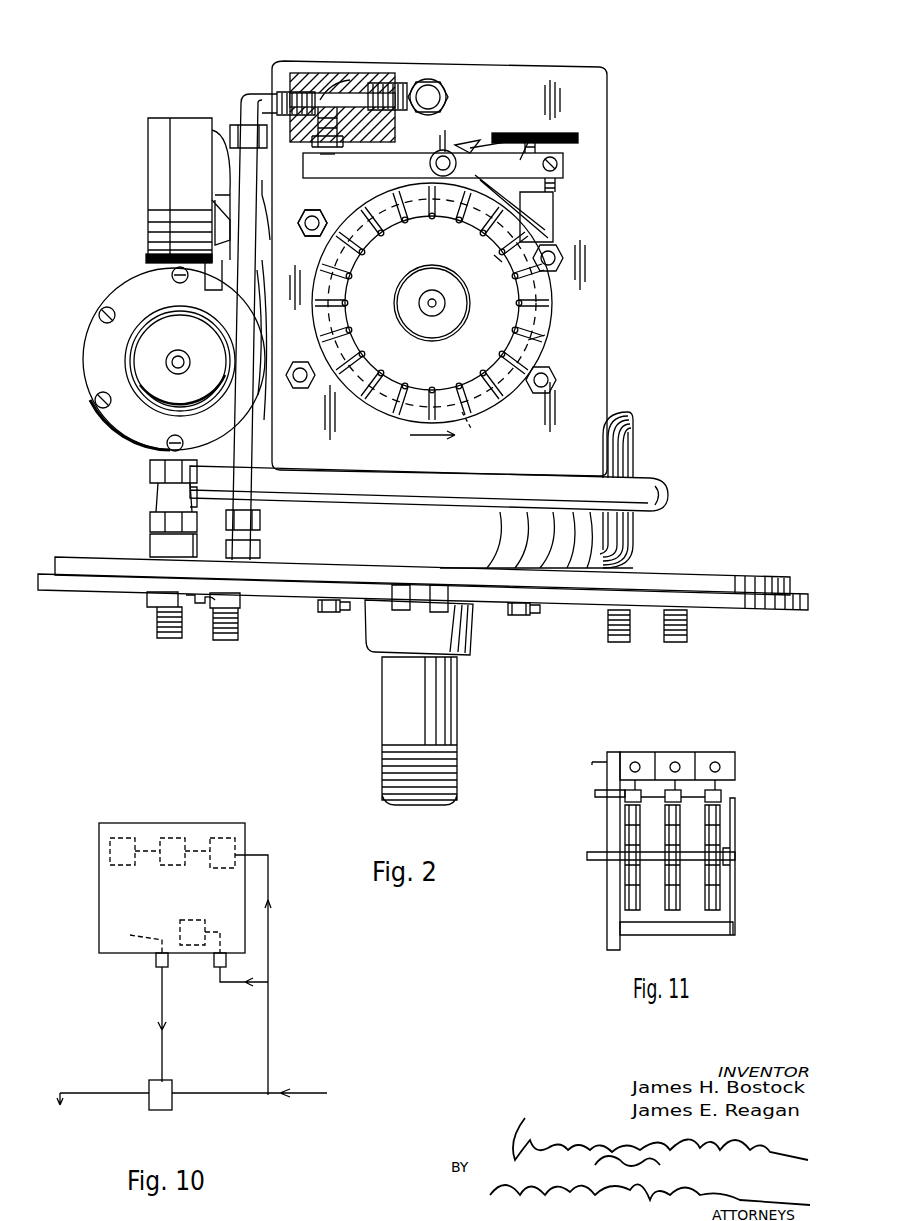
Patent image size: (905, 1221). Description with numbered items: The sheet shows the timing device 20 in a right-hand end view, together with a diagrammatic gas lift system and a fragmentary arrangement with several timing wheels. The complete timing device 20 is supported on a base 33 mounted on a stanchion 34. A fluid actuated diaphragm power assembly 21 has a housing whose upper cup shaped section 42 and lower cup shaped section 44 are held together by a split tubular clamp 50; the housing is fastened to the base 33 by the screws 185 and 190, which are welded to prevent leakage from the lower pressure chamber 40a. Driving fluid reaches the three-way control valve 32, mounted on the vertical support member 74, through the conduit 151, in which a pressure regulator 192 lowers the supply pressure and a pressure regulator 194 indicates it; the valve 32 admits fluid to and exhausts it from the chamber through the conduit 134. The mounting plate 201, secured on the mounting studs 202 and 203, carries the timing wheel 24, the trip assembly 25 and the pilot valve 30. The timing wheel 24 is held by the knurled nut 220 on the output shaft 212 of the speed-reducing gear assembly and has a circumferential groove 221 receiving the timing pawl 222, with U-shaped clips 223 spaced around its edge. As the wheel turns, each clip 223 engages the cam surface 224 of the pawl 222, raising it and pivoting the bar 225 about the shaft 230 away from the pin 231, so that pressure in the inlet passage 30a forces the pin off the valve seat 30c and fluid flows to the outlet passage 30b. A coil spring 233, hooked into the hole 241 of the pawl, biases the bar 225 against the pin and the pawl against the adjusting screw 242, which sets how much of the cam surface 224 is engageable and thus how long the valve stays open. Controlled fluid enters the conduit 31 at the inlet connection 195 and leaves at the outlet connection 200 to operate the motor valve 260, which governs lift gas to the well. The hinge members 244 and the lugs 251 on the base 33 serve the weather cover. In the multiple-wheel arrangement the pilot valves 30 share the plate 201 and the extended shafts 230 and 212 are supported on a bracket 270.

In FIG. 10, the timing device 20 is at (88, 835).
In FIG. 2, the fluid actuated diaphragm power assembly 21 is at (557, 479).
In FIG. 2, the timing wheel 24 is at (556, 300).
In FIG. 11, the timing wheel 24 is at (722, 838).
In FIG. 2, the trip assembly 25 is at (486, 128).
In FIG. 11, the trip assembly 25 is at (739, 790).
In FIG. 2, the pilot valve 30 is at (354, 73).
In FIG. 10, the pilot valve 30 is at (203, 912).
In FIG. 11, the pilot valve 30 is at (630, 752).
In FIG. 2, the inlet passage 30a is at (385, 80).
In FIG. 2, the outlet passage 30b is at (298, 100).
In FIG. 2, the valve seat 30c is at (340, 80).
In FIG. 2, the conduit 31 is at (240, 100).
In FIG. 10, the conduit 31 is at (169, 935).
In FIG. 11, the conduit 31 is at (637, 760).
In FIG. 2, the three-way control valve 32 is at (255, 270).
In FIG. 10, the three-way control valve 32 is at (172, 822).
In FIG. 2, the base 33 is at (78, 592).
In FIG. 2, the stanchion 34 is at (432, 695).
In FIG. 10, the lower pressure chamber 40a is at (122, 822).
In FIG. 2, the upper cup shaped section 42 is at (640, 461).
In FIG. 2, the lower cup shaped section 44 is at (640, 553).
In FIG. 2, the clamp 50 is at (668, 492).
In FIG. 2, the vertical support member 74 is at (278, 186).
In FIG. 2, the conduit 134 is at (160, 553).
In FIG. 2, the conduit 151 is at (228, 125).
In FIG. 10, the conduit 151 is at (250, 842).
In FIG. 2, the screw 185 is at (522, 617).
In FIG. 2, the screw 190 is at (335, 614).
In FIG. 2, the pressure regulator 192 is at (128, 272).
In FIG. 10, the pressure regulator 192 is at (222, 826).
In FIG. 2, the pressure regulator 194 is at (148, 130).
In FIG. 10, the inlet connection 195 is at (213, 966).
In FIG. 2, the outlet connection 200 is at (245, 600).
In FIG. 10, the outlet connection 200 is at (155, 962).
In FIG. 2, the mounting plate 201 is at (607, 94).
In FIG. 11, the mounting plate 201 is at (607, 752).
In FIG. 2, the mounting stud 202 is at (325, 218).
In FIG. 2, the mounting stud 203 is at (560, 255).
In FIG. 2, the output shaft 212 is at (432, 292).
In FIG. 11, the output shaft 212 is at (595, 862).
In FIG. 2, the knurled nut 220 is at (415, 322).
In FIG. 2, the circumferential groove 221 is at (485, 434).
In FIG. 2, the timing pawl 222 is at (555, 203).
In FIG. 2, the U-shaped clip 223 is at (545, 345).
In FIG. 2, the cam surface 224 is at (500, 258).
In FIG. 2, the bar 225 is at (565, 170).
In FIG. 2, the shaft 230 is at (452, 137).
In FIG. 11, the shaft 230 is at (620, 800).
In FIG. 2, the pin 231 is at (346, 164).
In FIG. 2, the coil spring 233 is at (567, 215).
In FIG. 2, the hole 241 is at (472, 140).
In FIG. 2, the adjusting screw 242 is at (580, 138).
In FIG. 2, the hinge member 244 is at (195, 640).
In FIG. 2, the lug 251 is at (435, 614).
In FIG. 10, the motor valve 260 is at (149, 1085).
In FIG. 11, the bracket 270 is at (735, 917).